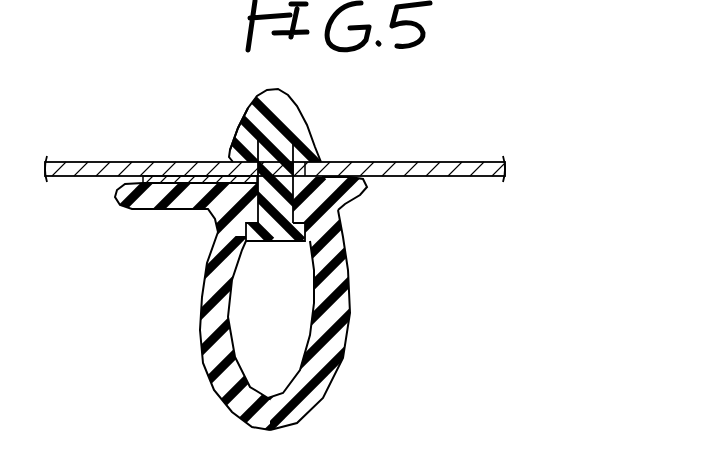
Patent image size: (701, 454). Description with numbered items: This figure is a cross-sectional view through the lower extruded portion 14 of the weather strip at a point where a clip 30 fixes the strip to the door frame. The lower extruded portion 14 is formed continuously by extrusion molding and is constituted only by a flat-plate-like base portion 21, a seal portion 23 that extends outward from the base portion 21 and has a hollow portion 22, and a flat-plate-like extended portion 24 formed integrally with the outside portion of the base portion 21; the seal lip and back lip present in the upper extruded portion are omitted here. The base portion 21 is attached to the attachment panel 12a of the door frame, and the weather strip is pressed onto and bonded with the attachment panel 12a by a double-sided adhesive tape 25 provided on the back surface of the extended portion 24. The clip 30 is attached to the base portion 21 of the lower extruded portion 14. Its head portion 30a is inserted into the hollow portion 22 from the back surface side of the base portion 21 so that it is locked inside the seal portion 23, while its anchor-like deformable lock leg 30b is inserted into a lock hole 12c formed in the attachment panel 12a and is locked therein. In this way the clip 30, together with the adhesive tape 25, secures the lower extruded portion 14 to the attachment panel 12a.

The lower extruded portion 14 is at (337, 390).
The attachment panel 12a is at (467, 178).
The lock hole 12c is at (302, 160).
The base portion 21 is at (356, 180).
The hollow portion 22 is at (240, 350).
The seal portion 23 is at (204, 327).
The extended portion 24 is at (170, 211).
The double-sided adhesive tape 25 is at (189, 161).
The clip 30 is at (292, 97).
The head portion 30a is at (302, 243).
The deformable lock leg 30b is at (236, 130).